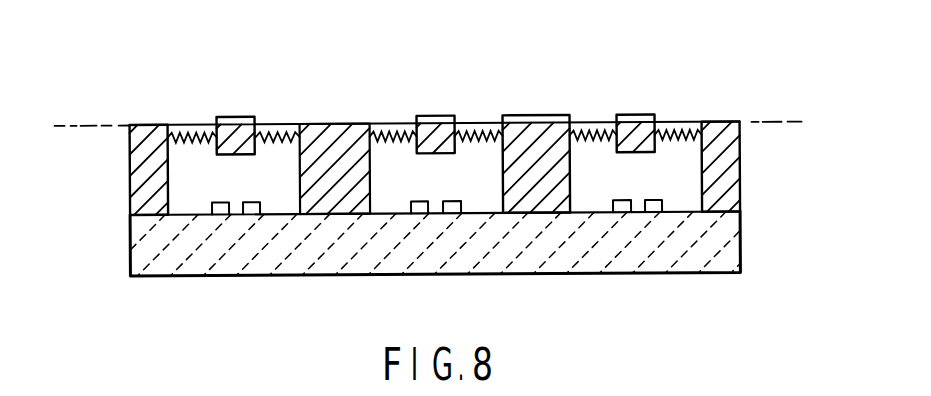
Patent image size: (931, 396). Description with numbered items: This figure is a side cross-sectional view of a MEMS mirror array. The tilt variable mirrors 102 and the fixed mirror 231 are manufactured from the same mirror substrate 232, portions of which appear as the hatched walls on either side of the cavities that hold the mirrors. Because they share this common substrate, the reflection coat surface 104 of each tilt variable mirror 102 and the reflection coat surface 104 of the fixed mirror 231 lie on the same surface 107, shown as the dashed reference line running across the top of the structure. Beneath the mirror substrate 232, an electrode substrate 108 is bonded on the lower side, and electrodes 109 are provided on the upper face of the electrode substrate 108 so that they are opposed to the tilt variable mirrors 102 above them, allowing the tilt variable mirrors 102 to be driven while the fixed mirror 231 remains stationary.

The tilt variable mirror 102 is at (230, 117).
The reflection coat surface 104 is at (523, 115).
The surface 107 is at (769, 121).
The electrode substrate 108 is at (635, 260).
The electrodes 109 is at (220, 215).
The fixed mirror 231 is at (552, 115).
The mirror substrate 232 is at (150, 127).